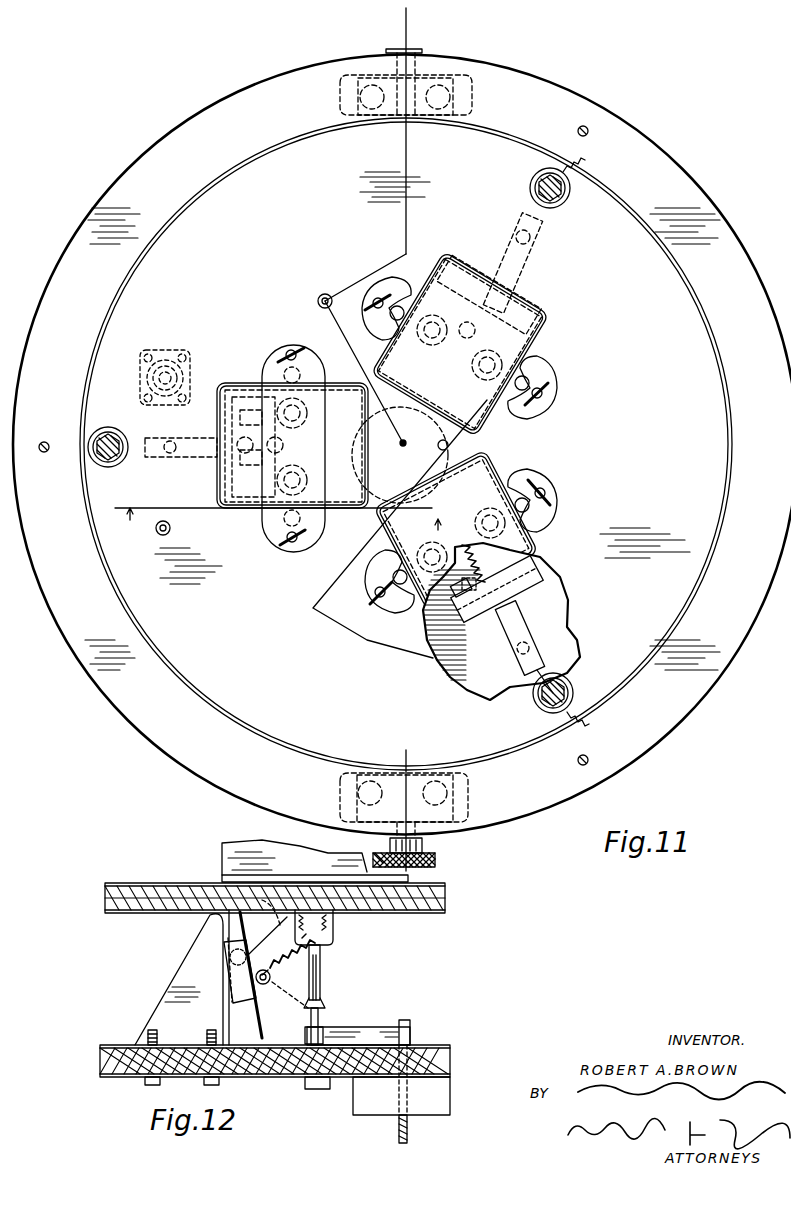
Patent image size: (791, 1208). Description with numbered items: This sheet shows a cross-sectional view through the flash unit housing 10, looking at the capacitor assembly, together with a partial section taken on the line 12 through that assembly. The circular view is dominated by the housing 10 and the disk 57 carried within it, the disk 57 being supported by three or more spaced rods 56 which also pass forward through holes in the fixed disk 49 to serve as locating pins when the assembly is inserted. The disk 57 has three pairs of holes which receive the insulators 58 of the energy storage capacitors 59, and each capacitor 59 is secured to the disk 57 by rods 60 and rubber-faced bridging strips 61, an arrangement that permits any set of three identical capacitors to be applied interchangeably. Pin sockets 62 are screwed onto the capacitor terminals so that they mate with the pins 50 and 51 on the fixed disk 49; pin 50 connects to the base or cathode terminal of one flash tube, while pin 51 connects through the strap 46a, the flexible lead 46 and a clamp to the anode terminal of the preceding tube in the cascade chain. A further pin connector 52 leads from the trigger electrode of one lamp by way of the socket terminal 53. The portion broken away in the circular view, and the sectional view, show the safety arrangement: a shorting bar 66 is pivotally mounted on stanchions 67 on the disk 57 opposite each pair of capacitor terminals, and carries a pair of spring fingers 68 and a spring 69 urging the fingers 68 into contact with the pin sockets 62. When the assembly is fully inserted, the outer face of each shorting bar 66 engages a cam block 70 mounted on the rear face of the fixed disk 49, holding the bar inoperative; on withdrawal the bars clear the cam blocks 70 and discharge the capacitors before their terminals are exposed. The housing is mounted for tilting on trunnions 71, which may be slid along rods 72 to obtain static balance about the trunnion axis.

In FIG. 11, the casing ring / housing 10 is at (414, 25).
In FIG. 11, the section line 12- 12 is at (281, 527).
In FIG. 11, the flexible lead 46 is at (518, 448).
In FIG. 12, the flexible lead 46 is at (409, 1130).
In FIG. 11, the strap 46a is at (367, 453).
In FIG. 12, the strap 46a is at (372, 1027).
In FIG. 12, the fixed disk 49 is at (140, 1036).
In FIG. 11, the pin connector 50 is at (258, 383).
In FIG. 11, the pin connector 51 is at (274, 545).
In FIG. 12, the pin connector 51 is at (323, 1015).
In FIG. 11, the pin connector 52 is at (318, 296).
In FIG. 11, the socket terminal 53 is at (470, 443).
In FIG. 11, the rod 56 is at (114, 464).
In FIG. 11, the disk 57 is at (406, 444).
In FIG. 12, the disk 57 is at (130, 913).
In FIG. 11, the insulator 58 is at (310, 400).
In FIG. 12, the insulator 58 is at (335, 932).
In FIG. 11, the energy storage capacitor 59 is at (232, 512).
In FIG. 12, the energy storage capacitor 59 is at (222, 858).
In FIG. 11, the rod 60 is at (285, 350).
In FIG. 11, the rubber-faced bridging strip 61 is at (318, 351).
In FIG. 12, the pin socket 62 is at (322, 962).
In FIG. 11, the shorting bar 66 is at (520, 596).
In FIG. 12, the shorting bar 66 is at (246, 1000).
In FIG. 11, the stanchion 67 is at (546, 555).
In FIG. 12, the stanchion 67 is at (262, 900).
In FIG. 11, the spring finger 68 is at (478, 551).
In FIG. 12, the spring finger 68 is at (264, 1028).
In FIG. 11, the spring 69 is at (462, 538).
In FIG. 12, the spring 69 is at (288, 961).
In FIG. 11, the cam block 70 is at (178, 460).
In FIG. 12, the cam block 70 is at (190, 980).
In FIG. 11, the trunnion 71 is at (412, 67).
In FIG. 11, the rod 72 is at (366, 94).